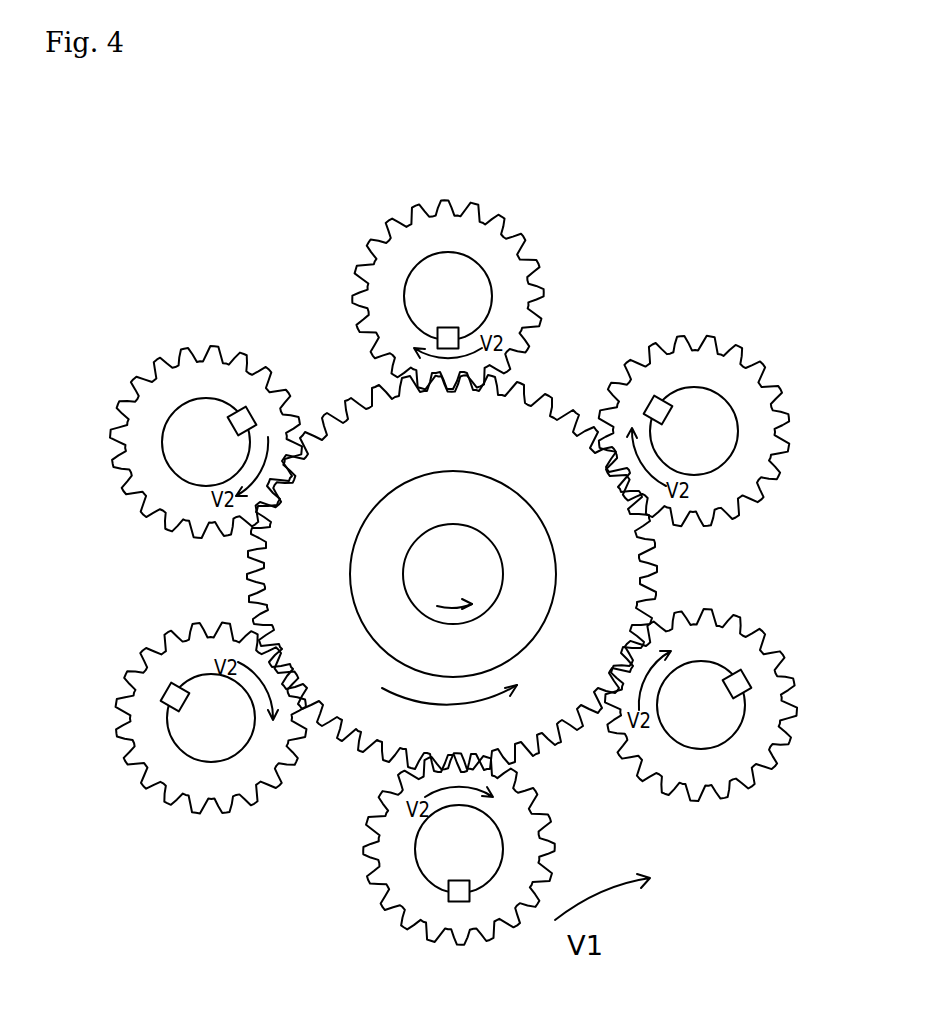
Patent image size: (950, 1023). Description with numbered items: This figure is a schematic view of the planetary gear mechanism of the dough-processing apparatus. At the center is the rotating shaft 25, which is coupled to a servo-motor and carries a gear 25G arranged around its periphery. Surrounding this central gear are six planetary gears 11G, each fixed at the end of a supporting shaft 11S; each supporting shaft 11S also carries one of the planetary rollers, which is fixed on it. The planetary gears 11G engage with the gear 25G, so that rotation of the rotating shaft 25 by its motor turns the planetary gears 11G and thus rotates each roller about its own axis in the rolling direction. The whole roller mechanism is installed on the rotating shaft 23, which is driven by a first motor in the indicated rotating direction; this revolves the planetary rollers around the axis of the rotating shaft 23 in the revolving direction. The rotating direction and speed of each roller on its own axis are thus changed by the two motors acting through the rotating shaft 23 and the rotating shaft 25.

The planetary gear 11G is at (427, 222).
The supporting shaft 11S is at (417, 280).
The rotating shaft 23 is at (483, 543).
The rotating shaft 25 is at (597, 557).
The gear 25G is at (638, 583).